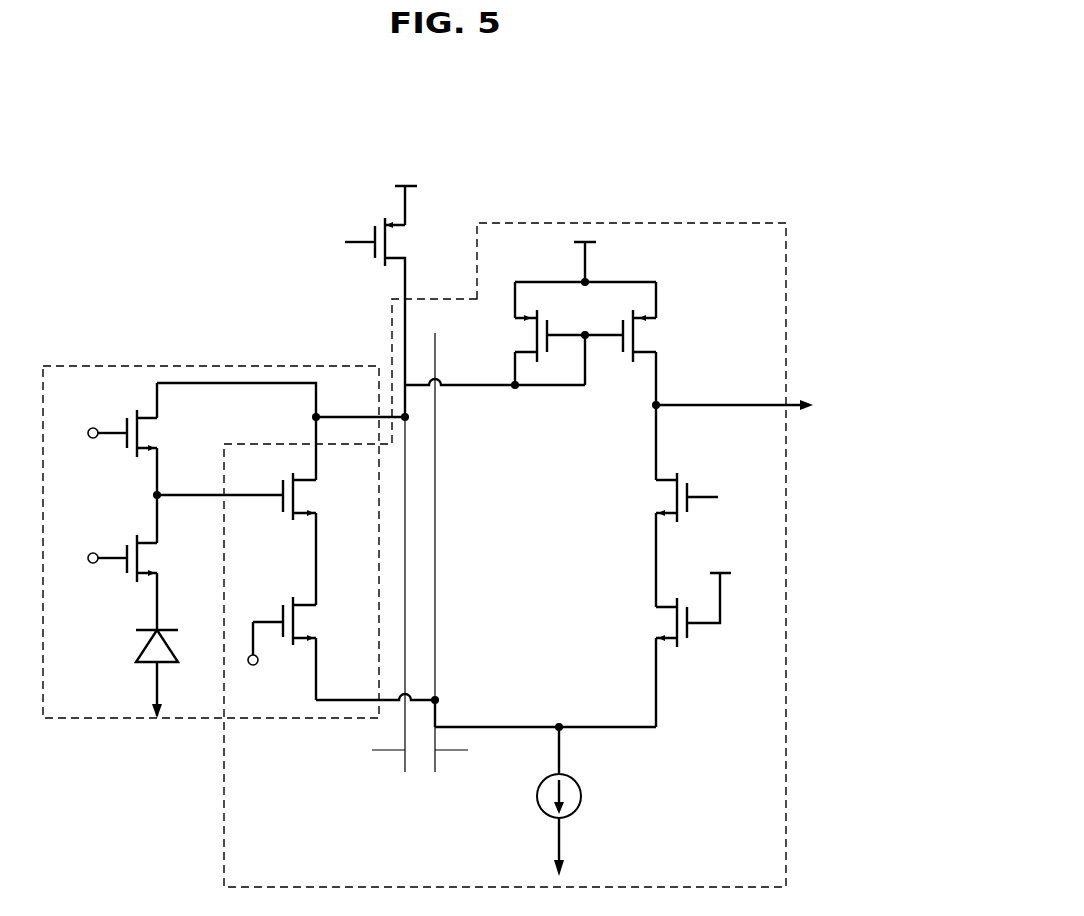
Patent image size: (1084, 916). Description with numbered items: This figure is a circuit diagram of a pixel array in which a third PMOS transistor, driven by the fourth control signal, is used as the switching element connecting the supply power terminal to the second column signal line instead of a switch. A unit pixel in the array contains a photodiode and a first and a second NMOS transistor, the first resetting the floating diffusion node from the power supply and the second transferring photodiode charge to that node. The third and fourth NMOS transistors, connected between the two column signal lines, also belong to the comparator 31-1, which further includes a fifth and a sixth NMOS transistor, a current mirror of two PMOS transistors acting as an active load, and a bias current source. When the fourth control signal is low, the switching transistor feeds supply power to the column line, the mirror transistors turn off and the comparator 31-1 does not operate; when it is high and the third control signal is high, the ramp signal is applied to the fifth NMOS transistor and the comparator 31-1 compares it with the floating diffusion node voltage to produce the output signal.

The comparator 31-1 is at (552, 223).